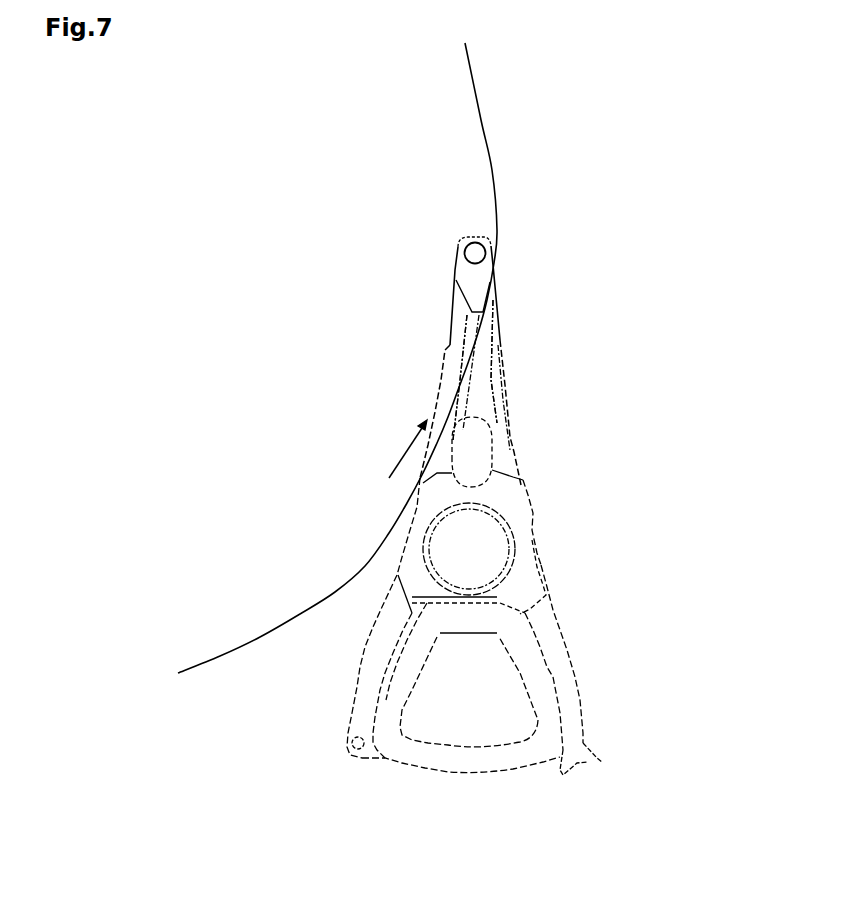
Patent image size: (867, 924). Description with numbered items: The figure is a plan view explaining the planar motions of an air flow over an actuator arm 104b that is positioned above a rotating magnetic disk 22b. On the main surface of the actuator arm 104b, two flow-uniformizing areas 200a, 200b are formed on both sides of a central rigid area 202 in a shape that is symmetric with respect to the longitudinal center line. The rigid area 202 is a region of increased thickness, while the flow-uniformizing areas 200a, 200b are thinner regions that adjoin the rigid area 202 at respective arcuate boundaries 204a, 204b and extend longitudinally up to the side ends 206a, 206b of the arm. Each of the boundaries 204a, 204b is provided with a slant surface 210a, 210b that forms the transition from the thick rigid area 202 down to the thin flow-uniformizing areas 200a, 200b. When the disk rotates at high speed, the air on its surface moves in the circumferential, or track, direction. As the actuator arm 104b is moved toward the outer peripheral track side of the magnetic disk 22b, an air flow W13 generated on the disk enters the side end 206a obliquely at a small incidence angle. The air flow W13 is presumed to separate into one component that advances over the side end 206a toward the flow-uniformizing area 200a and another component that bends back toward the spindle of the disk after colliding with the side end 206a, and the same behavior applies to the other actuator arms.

The magnetic disk 22b is at (487, 120).
The rigid area 202 is at (503, 230).
The flow-uniformizing area 200a is at (447, 345).
The flow-uniformizing area 200b is at (500, 335).
The boundary 204a is at (447, 370).
The slant surface 210a is at (374, 371).
The boundary 204b is at (487, 390).
The slant surface 210b is at (619, 361).
The side end 206a is at (437, 390).
The side end 206b is at (513, 408).
The actuator arm 104b is at (617, 423).
The air flow W13 is at (397, 468).